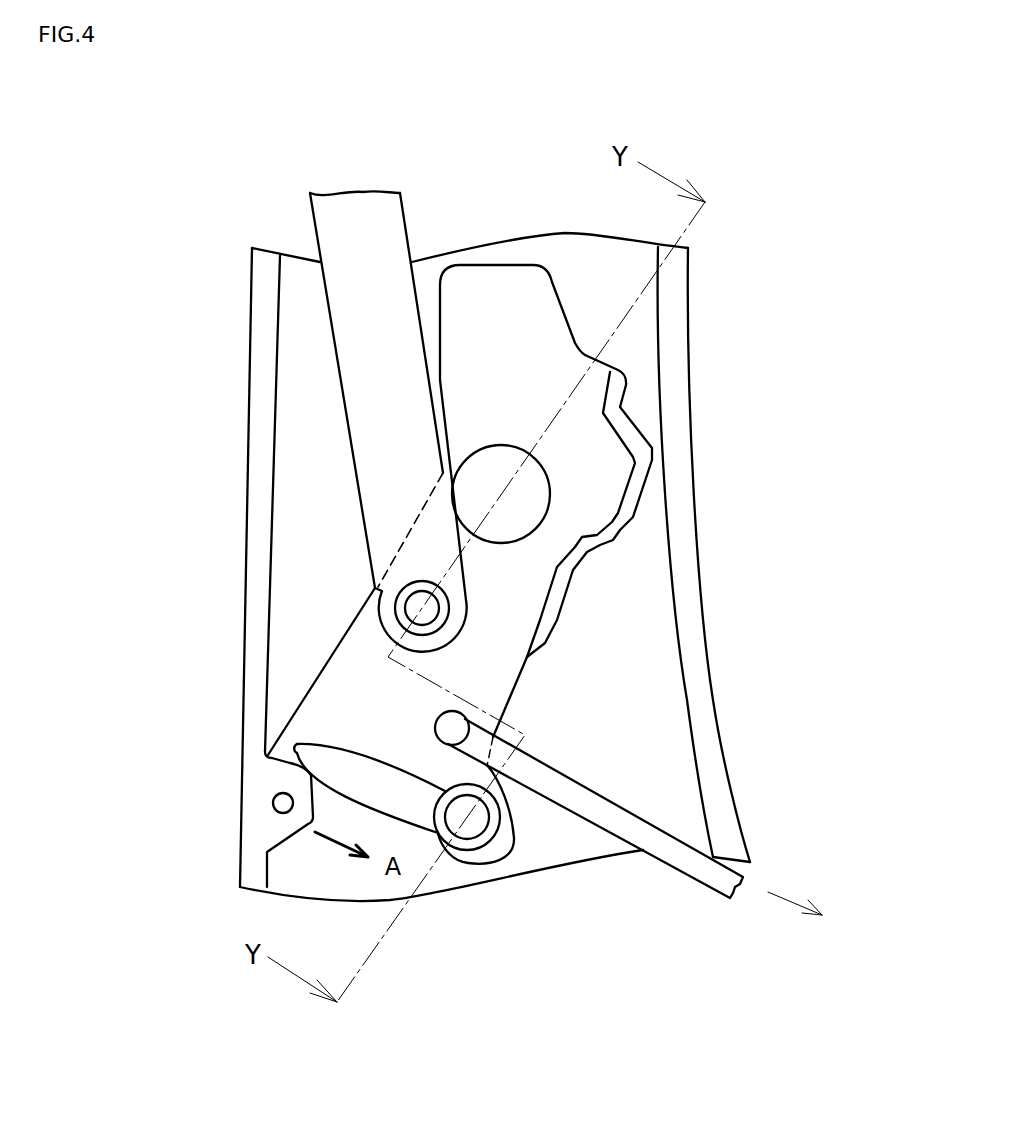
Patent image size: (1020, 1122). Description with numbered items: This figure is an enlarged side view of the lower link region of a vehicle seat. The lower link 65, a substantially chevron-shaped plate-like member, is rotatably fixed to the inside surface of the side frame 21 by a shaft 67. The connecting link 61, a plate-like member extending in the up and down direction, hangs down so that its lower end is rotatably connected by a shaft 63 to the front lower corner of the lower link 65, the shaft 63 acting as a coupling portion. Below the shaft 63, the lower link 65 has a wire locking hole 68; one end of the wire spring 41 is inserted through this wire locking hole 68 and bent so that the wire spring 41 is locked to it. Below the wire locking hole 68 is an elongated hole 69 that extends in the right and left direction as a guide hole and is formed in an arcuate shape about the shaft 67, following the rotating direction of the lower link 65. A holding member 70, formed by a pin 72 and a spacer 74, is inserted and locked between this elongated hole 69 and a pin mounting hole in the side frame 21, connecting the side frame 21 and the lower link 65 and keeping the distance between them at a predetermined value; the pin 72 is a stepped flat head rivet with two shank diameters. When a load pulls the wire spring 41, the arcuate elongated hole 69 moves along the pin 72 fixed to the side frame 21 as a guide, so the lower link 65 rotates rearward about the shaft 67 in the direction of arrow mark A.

The side frame 21 is at (690, 328).
The wire spring 41 is at (677, 860).
The connecting link 61 is at (316, 222).
The shaft 63 is at (408, 604).
The lower link 65 is at (500, 266).
The shaft 67 is at (533, 510).
The wire locking hole 68 is at (438, 736).
The elongated hole 69 is at (308, 768).
The holding member 70 is at (565, 1012).
The pin 72 is at (500, 840).
The spacer 74 is at (465, 863).